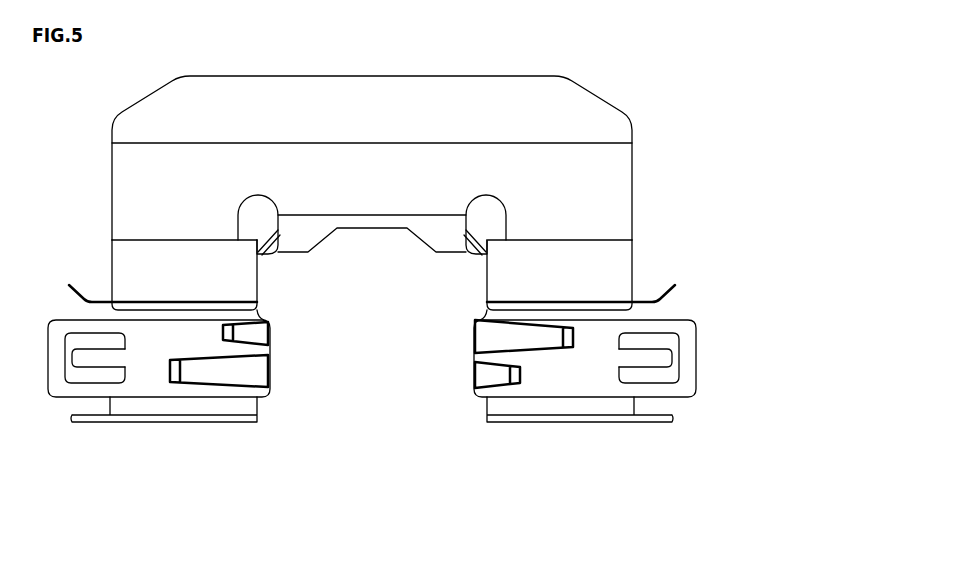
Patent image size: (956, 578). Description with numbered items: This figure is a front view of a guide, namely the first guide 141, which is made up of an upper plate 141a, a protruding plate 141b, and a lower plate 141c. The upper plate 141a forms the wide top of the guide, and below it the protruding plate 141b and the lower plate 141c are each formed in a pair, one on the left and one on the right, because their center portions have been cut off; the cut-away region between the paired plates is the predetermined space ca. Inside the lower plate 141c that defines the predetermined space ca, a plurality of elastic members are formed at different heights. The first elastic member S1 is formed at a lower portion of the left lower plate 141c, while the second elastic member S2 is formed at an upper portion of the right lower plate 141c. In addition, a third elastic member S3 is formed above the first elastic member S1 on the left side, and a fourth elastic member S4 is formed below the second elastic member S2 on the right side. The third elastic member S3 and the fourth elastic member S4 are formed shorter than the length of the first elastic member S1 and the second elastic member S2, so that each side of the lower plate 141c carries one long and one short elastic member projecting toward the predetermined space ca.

The first guide 141 is at (451, 305).
The upper plate 141a is at (603, 177).
The protruding plate 141b is at (607, 267).
The lower plate 141c is at (414, 382).
The first elastic member S1 is at (208, 373).
The second elastic member S2 is at (485, 337).
The third elastic member S3 is at (307, 373).
The fourth elastic member S4 is at (488, 378).
The predetermined space ca is at (380, 387).